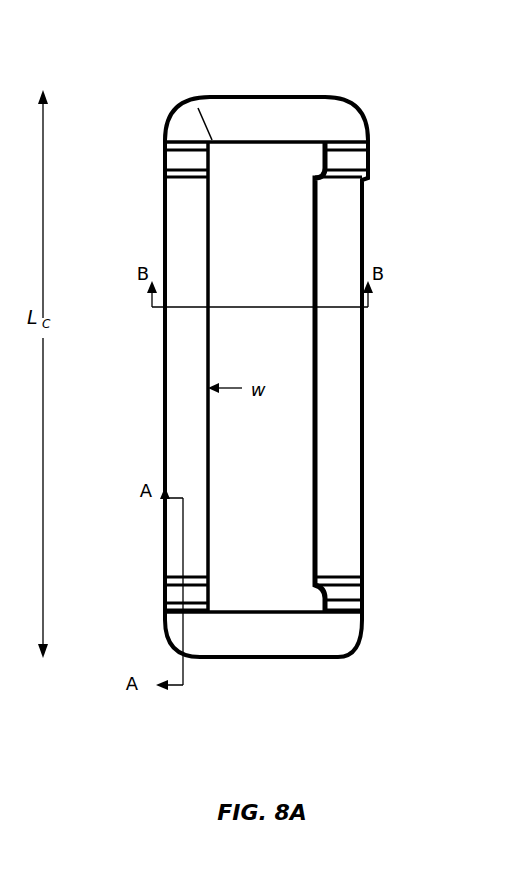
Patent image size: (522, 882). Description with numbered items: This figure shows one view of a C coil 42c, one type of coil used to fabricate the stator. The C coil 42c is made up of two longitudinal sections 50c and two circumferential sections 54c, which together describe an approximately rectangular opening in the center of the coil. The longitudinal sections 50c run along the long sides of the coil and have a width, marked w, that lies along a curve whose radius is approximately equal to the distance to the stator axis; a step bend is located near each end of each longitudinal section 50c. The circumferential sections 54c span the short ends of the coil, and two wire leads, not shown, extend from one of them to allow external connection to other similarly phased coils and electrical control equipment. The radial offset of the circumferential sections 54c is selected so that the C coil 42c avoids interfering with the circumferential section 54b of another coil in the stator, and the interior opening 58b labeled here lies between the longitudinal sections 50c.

The C coil 42c is at (447, 268).
The longitudinal section 50c is at (140, 600).
The circumferential section 54b is at (360, 700).
The circumferential section 54c is at (163, 70).
The interior opening 58b is at (267, 488).